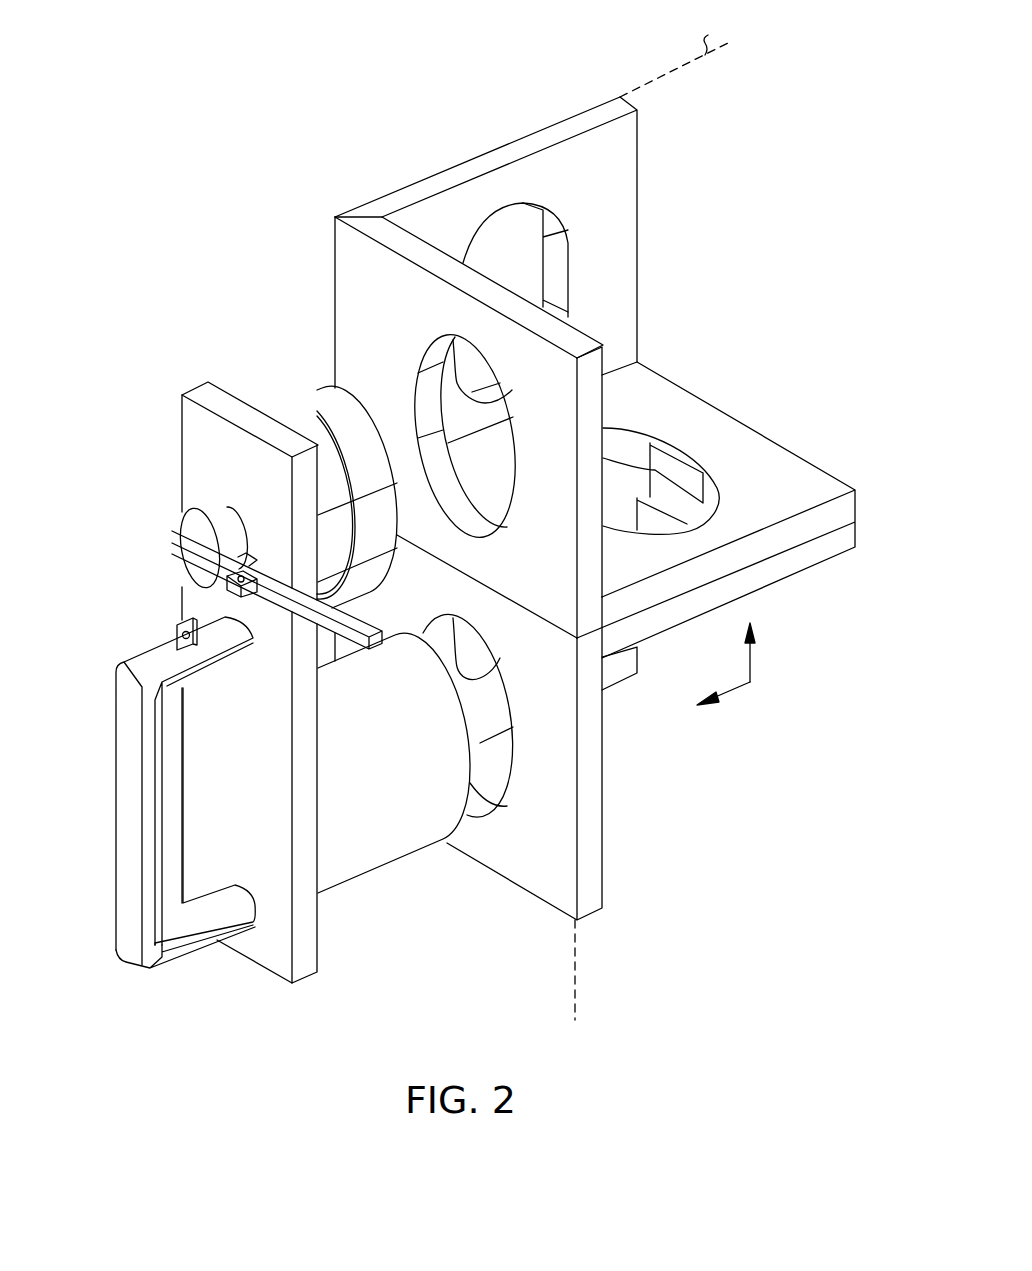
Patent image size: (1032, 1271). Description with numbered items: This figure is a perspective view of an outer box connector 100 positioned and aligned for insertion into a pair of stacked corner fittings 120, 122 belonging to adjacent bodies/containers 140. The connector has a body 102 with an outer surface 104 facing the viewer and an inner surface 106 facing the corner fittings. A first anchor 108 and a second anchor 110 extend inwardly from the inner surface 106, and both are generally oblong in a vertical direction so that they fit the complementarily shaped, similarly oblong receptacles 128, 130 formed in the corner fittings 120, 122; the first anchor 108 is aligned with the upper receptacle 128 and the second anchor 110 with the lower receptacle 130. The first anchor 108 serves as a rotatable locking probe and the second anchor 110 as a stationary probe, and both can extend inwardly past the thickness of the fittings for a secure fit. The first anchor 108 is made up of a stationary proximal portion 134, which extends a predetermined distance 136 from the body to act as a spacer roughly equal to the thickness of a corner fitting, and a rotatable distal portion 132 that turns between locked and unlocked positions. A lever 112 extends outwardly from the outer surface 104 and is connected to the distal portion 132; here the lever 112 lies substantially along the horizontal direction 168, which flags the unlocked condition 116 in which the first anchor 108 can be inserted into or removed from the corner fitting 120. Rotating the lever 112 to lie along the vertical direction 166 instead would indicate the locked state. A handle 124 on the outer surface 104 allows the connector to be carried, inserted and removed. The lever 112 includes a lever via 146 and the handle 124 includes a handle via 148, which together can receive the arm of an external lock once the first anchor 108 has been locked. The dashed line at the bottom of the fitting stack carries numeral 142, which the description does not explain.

The outer box connector 100 is at (107, 353).
The body 102 is at (203, 385).
The outer surface 104 is at (180, 455).
The inner surface 106 is at (237, 396).
The first anchor 108 is at (302, 374).
The second anchor 110 is at (404, 897).
The lever 112 is at (369, 623).
The unlocked condition 116 is at (150, 582).
The corner fitting 120 is at (598, 393).
The corner fitting 122 is at (598, 748).
The handle 124 is at (118, 868).
The receptacle 128 is at (512, 464).
The receptacle 130 is at (513, 722).
The distal portion 132 is at (378, 585).
The proximal portion 134 is at (327, 485).
The predetermined distance 136 is at (295, 409).
The bodies/containers 140 is at (674, 58).
The lower axis 142 is at (577, 1006).
The lever via 146 is at (243, 595).
The handle via 148 is at (176, 633).
The vertical direction 166 is at (752, 655).
The horizontal direction 168 is at (723, 698).